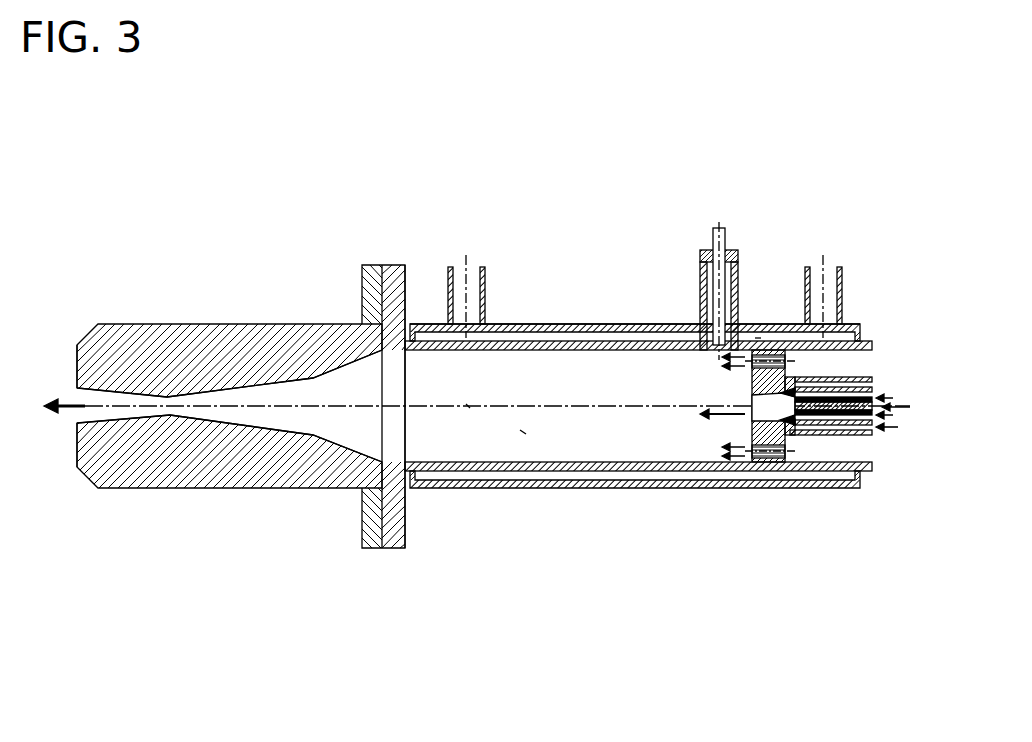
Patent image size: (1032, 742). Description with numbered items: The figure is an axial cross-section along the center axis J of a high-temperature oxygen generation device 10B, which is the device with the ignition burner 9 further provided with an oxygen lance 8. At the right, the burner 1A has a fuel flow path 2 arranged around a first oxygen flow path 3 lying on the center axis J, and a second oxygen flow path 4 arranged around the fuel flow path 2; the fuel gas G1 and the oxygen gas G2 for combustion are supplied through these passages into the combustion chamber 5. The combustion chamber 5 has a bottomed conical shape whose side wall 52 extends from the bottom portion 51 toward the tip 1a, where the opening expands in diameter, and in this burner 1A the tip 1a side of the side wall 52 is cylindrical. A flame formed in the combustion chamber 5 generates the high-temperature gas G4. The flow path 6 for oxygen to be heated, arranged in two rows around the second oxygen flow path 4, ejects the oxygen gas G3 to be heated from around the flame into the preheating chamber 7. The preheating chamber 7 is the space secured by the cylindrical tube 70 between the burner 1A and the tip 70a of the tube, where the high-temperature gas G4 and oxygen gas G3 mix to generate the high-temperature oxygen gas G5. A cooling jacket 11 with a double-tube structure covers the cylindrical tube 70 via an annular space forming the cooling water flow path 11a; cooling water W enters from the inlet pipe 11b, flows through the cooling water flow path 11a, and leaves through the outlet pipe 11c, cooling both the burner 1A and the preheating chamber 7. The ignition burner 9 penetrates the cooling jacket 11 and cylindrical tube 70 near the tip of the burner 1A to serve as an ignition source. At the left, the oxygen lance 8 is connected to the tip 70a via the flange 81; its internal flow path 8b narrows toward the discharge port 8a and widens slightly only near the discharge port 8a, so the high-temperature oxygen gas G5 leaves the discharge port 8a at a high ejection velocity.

The high-temperature oxygen generation device 10B is at (227, 232).
The oxygen lance 8 is at (192, 318).
The discharge port 8a is at (78, 388).
The internal flow path 8b is at (278, 384).
The flange 81 is at (393, 255).
The tip of the cylindrical tube 70a is at (388, 330).
The cylindrical tube 70 is at (515, 344).
The cooling jacket 11 is at (538, 318).
The cooling water flow path 11a is at (563, 326).
The inlet pipe 11b is at (843, 280).
The outlet pipe 11c is at (485, 266).
The ignition burner 9 is at (693, 285).
The cooling water W is at (758, 338).
The burner 1A is at (770, 415).
The tip 1a is at (751, 395).
The combustion chamber 5 is at (711, 408).
The bottom portion 51 is at (757, 398).
The side wall 52 is at (752, 420).
The flow path for oxygen to be heated 6 is at (768, 366).
The second oxygen flow path 4 is at (838, 391).
The first oxygen flow path 3 is at (853, 408).
The fuel flow path 2 is at (864, 398).
The fuel gas G1 is at (886, 398).
The oxygen gas for combustion G2 is at (887, 428).
The oxygen gas to be heated G3 is at (738, 350).
The high-temperature gas G4 is at (708, 418).
The high-temperature oxygen gas G5 is at (62, 421).
The center axis J is at (468, 410).
The preheating chamber 7 is at (523, 433).